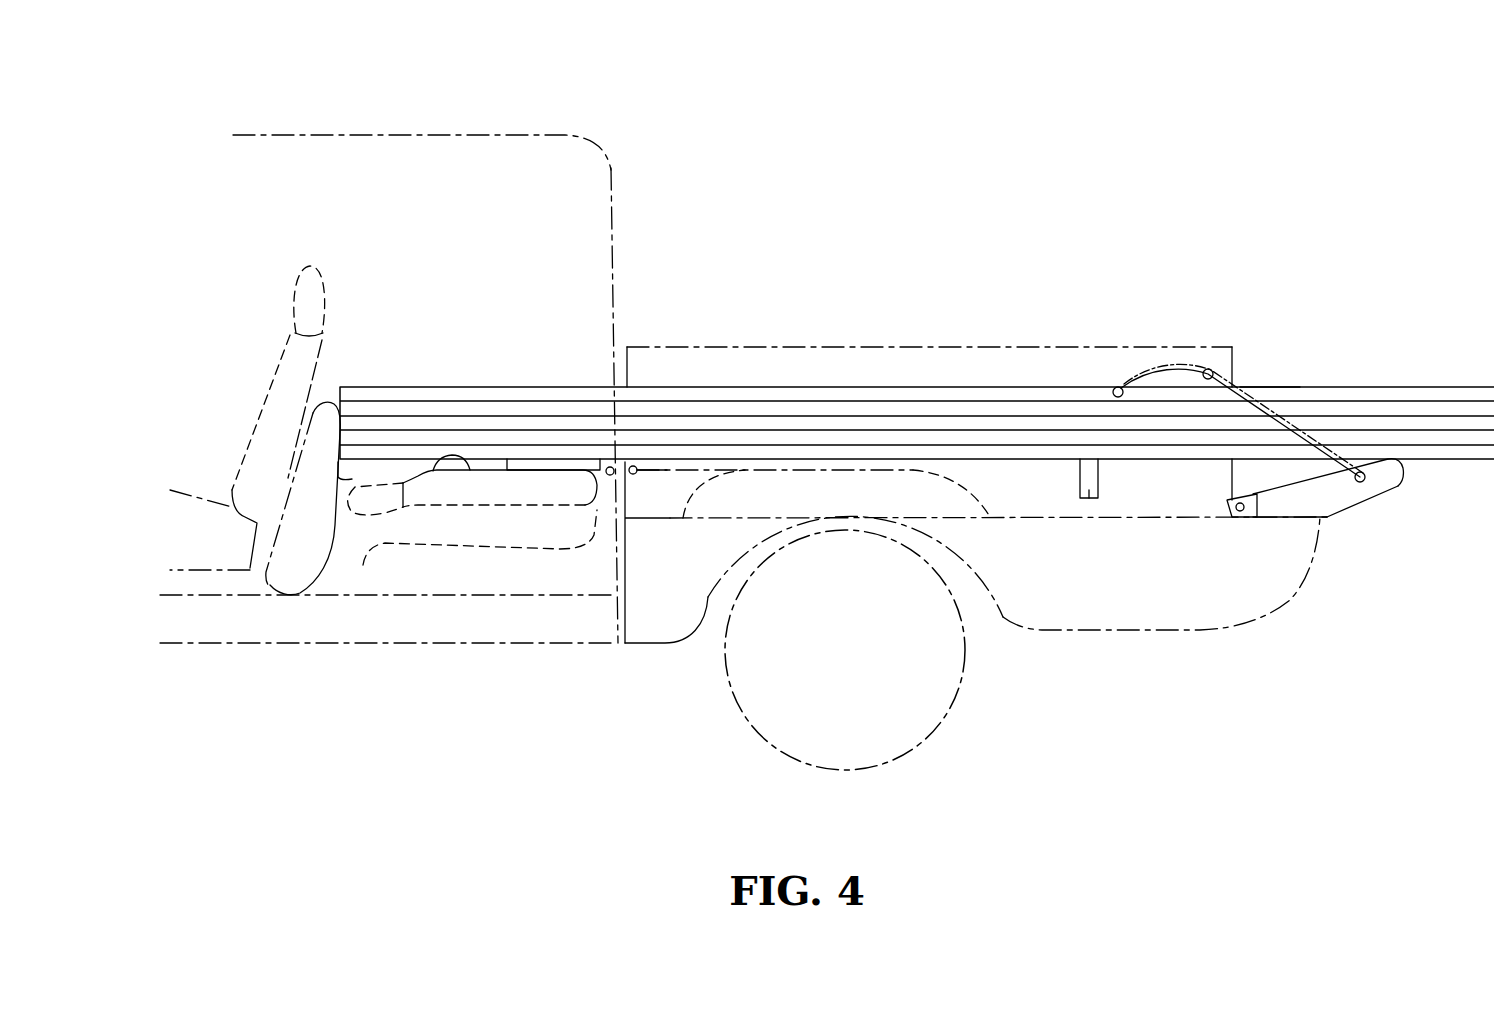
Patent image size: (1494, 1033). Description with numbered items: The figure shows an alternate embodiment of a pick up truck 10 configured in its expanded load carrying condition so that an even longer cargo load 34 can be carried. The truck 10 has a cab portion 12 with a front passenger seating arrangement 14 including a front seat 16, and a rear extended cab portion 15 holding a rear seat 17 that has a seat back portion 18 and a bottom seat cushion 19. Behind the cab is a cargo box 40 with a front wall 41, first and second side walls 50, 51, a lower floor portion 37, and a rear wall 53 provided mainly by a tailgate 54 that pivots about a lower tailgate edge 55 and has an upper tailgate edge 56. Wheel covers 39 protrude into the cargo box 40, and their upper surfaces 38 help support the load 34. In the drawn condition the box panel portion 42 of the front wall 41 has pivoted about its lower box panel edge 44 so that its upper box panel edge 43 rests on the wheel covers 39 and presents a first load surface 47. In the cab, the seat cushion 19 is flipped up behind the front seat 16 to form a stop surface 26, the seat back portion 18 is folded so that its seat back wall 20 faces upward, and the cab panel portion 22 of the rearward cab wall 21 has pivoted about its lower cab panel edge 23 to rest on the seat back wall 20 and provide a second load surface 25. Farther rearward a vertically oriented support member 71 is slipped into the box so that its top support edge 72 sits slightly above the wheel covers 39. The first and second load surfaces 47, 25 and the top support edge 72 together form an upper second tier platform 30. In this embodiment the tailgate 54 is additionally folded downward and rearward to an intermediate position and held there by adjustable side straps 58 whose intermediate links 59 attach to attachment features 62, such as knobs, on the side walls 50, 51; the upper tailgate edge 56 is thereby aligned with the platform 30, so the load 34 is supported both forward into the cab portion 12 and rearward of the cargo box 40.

The pick up truck 10 is at (746, 200).
The cab portion 12 is at (556, 130).
The front passenger seating arrangement 14 is at (263, 356).
The rear extended cab portion 15 is at (425, 315).
The front seat 16 is at (255, 447).
The rear seat 17 is at (305, 596).
The seat back portion 18 is at (518, 505).
The bottom seat cushion 19 is at (278, 574).
The seat back wall 20 is at (435, 472).
The rearward cab wall 21 is at (614, 168).
The cab panel portion 22 is at (537, 452).
The lower cab panel edge 23 is at (608, 465).
The second load surface 25 is at (520, 460).
The stop surface 26 is at (357, 460).
The upper second tier platform 30 is at (843, 396).
The cargo load 34 is at (781, 375).
The lower floor portion 37 is at (1163, 517).
The upper surfaces 38 is at (852, 465).
The wheel covers 39 is at (914, 457).
The cargo box 40 is at (845, 336).
The front wall 41 is at (620, 287).
The box panel portion 42 is at (666, 485).
The upper box panel edge 43 is at (797, 519).
The lower box panel edge 44 is at (646, 475).
The first load surface 47 is at (684, 462).
The first side wall 50 is at (929, 295).
The second side wall 51 is at (982, 347).
The rear wall 53 is at (1324, 451).
The tailgate 54 is at (1338, 512).
The lower tailgate edge 55 is at (1254, 505).
The upper tailgate edge 56 is at (1382, 483).
The adjustable side straps 58 is at (1262, 387).
The intermediate links 59 is at (1239, 383).
The attachment features 62 is at (1210, 368).
The support member 71 is at (1089, 500).
The top support edge 72 is at (1091, 449).